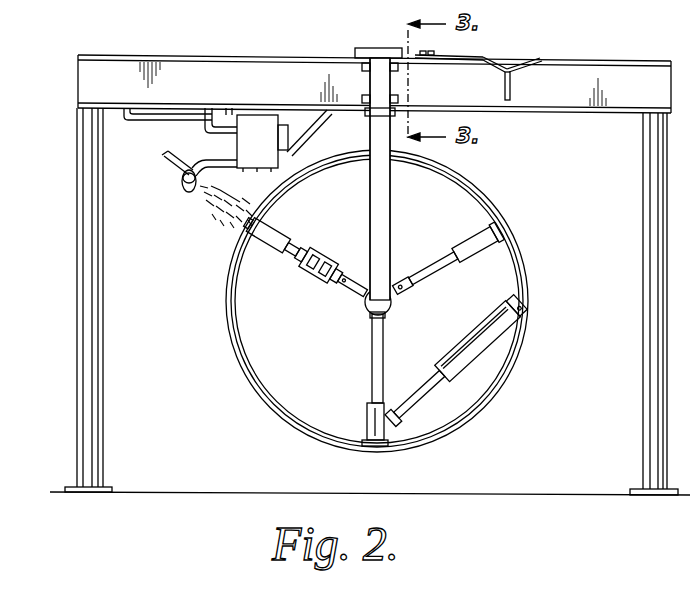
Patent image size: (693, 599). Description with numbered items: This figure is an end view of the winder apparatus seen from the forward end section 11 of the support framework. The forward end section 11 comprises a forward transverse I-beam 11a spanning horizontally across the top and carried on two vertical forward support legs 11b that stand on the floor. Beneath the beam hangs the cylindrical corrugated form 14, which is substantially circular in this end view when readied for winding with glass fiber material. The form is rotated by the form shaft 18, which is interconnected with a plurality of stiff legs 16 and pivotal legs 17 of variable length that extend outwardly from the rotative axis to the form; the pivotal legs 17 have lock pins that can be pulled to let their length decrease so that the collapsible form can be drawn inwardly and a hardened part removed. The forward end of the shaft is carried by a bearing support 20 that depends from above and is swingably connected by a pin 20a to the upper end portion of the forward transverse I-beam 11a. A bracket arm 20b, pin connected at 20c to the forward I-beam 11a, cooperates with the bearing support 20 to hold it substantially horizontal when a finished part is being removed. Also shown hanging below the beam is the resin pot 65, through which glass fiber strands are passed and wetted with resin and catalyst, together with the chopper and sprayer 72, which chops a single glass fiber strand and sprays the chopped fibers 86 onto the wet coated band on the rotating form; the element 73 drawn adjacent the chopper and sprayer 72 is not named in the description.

The forward end section 11 is at (371, 263).
The forward transverse I-beam 11a is at (240, 62).
The forward support legs 11b is at (100, 256).
The cylindrical corrugated form 14 is at (287, 420).
The stiff legs 16 is at (335, 262).
The pivotal legs 17 is at (428, 270).
The form shaft 18 is at (390, 304).
The bearing support 20 is at (461, 164).
The pin 20a is at (394, 62).
The bracket arm 20b is at (538, 58).
The pin connection 20c is at (430, 52).
The resin pot 65 is at (284, 141).
The chopper and sprayer 72 is at (180, 183).
The nozzle handle 73 is at (187, 168).
The chopped fibers 86 is at (222, 214).